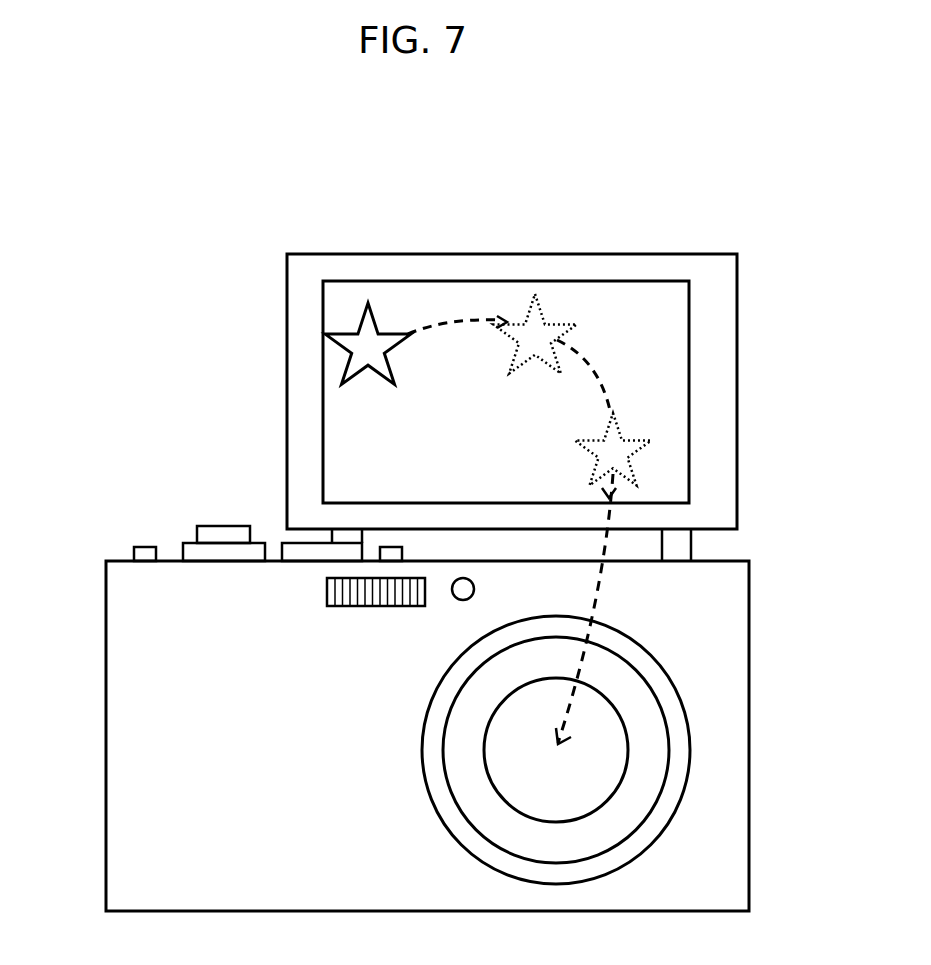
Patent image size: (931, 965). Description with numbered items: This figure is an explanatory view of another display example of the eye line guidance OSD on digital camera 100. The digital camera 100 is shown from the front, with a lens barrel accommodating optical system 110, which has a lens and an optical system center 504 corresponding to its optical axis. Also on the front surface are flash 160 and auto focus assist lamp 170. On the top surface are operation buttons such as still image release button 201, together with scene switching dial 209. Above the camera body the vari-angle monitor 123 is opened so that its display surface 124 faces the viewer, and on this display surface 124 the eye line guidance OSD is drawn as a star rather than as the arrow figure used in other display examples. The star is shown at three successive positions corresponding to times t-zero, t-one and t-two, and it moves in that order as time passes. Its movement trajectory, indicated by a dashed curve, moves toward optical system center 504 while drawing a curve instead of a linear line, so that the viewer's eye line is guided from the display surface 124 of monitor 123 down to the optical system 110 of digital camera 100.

The digital camera 100 is at (184, 214).
The optical system 110 is at (650, 767).
The vari-angle monitor 123 is at (305, 412).
The display surface 124 is at (350, 446).
The flash 160 is at (375, 592).
The auto focus assist lamp 170 is at (460, 592).
The still image release button 201 is at (213, 533).
The scene switching dial 209 is at (285, 553).
The optical system center 504 is at (560, 750).